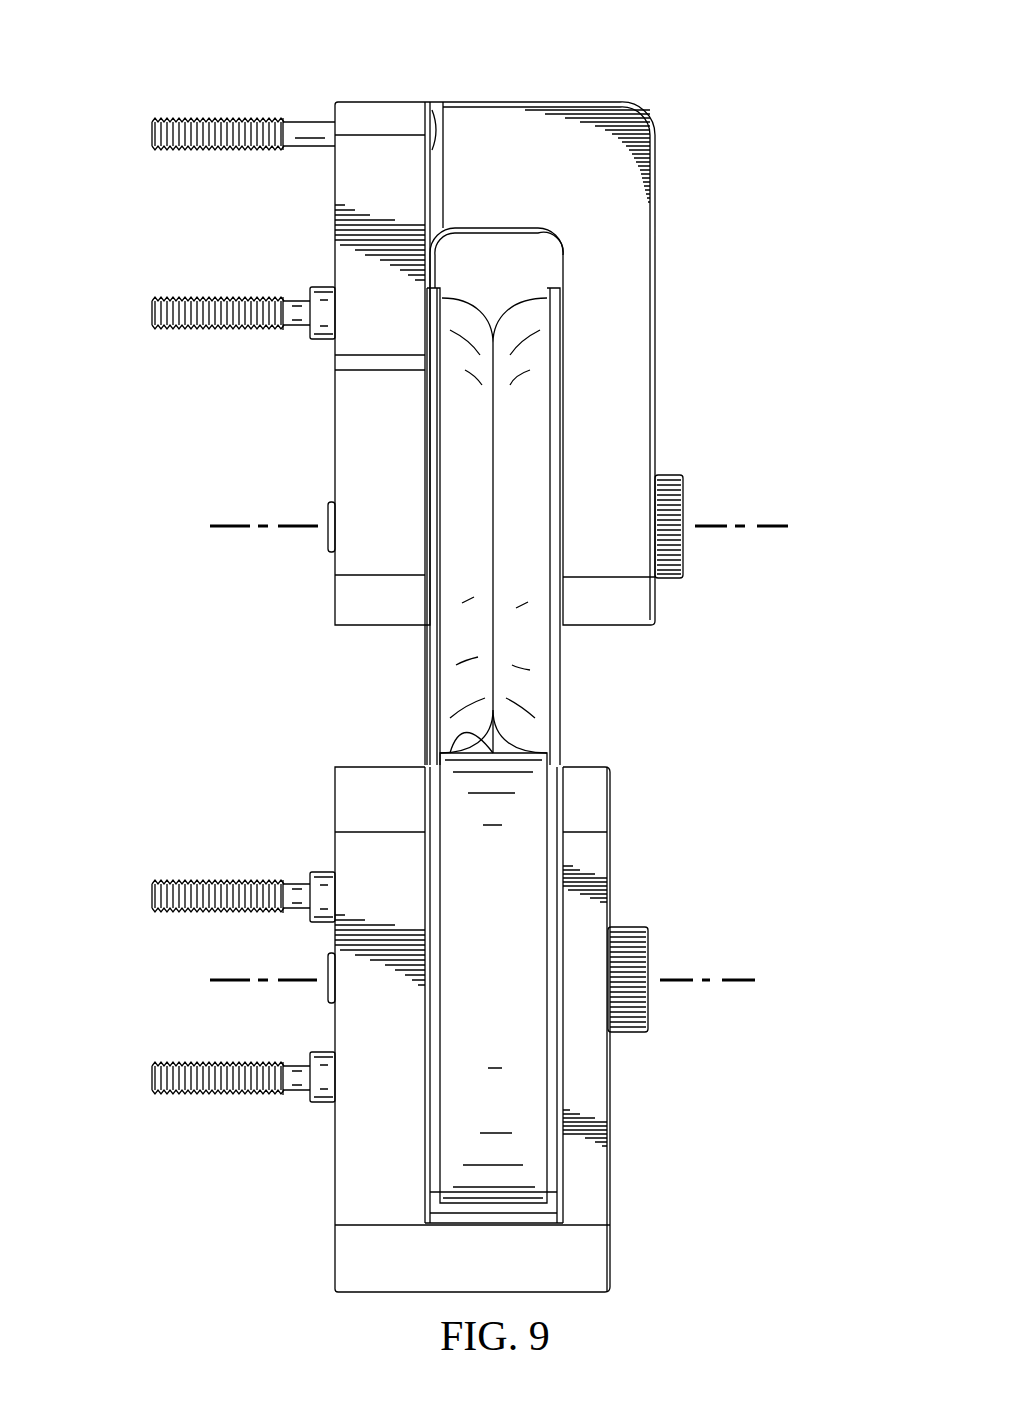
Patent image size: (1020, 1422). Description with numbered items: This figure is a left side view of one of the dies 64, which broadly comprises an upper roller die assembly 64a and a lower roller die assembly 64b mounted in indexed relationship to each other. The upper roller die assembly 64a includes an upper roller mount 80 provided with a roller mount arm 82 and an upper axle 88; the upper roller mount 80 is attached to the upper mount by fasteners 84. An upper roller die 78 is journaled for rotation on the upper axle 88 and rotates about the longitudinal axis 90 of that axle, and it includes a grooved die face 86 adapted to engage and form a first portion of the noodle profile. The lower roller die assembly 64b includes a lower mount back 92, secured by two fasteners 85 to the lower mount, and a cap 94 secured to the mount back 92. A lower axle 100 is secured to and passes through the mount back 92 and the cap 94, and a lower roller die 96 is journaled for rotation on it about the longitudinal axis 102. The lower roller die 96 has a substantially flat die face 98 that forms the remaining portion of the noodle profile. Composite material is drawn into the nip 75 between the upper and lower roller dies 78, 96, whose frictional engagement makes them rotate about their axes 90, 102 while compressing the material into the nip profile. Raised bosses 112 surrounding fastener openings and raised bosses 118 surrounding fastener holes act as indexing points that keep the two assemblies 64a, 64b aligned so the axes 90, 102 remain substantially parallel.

The die 64 is at (690, 68).
The upper roller die assembly 64a is at (742, 208).
The lower roller die assembly 64b is at (706, 844).
The nip 75 is at (450, 728).
The upper roller die 78 is at (427, 675).
The upper roller mount 80 is at (378, 102).
The roller mount arm 82 is at (657, 343).
The fasteners 84 is at (152, 128).
The fasteners 85 is at (152, 893).
The grooved die face 86 is at (530, 640).
The upper axle 88 is at (685, 498).
The longitudinal axis 90 is at (773, 527).
The lower mount back 92 is at (333, 1250).
The cap 94 is at (612, 1175).
The lower roller die 96 is at (562, 1067).
The flat die face 98 is at (453, 1035).
The lower axle 100 is at (650, 950).
The longitudinal axis 102 is at (737, 983).
The raised bosses 112 is at (320, 870).
The raised bosses 118 is at (318, 340).